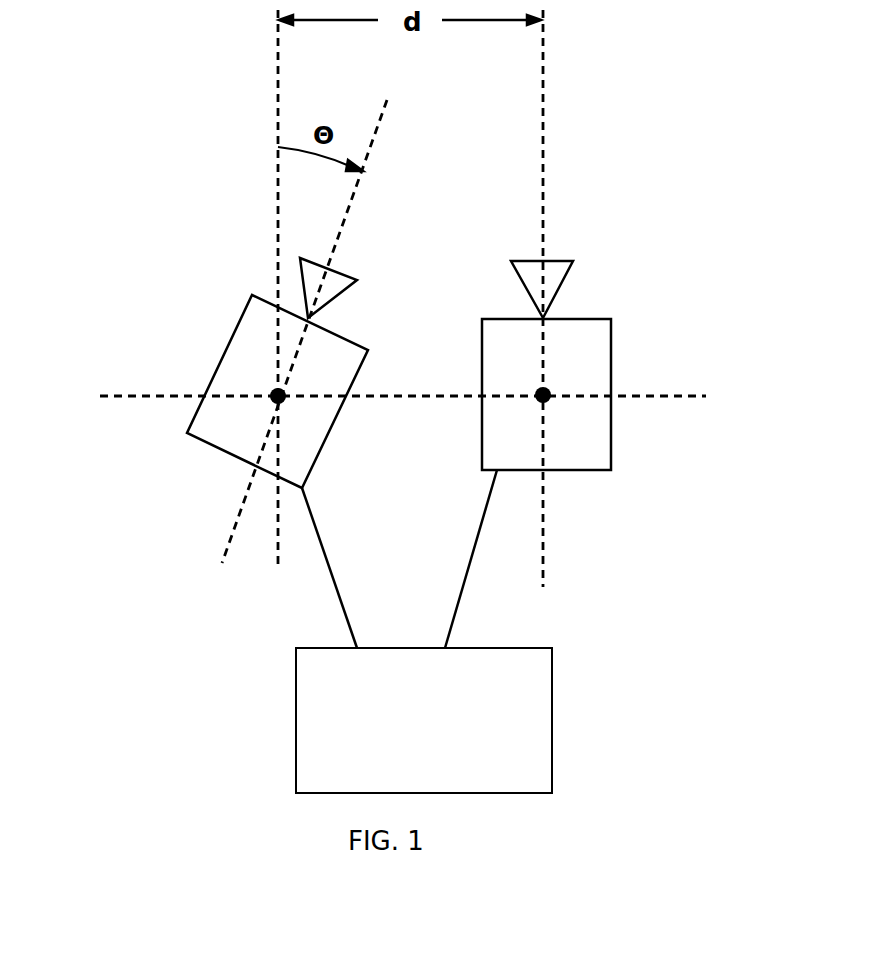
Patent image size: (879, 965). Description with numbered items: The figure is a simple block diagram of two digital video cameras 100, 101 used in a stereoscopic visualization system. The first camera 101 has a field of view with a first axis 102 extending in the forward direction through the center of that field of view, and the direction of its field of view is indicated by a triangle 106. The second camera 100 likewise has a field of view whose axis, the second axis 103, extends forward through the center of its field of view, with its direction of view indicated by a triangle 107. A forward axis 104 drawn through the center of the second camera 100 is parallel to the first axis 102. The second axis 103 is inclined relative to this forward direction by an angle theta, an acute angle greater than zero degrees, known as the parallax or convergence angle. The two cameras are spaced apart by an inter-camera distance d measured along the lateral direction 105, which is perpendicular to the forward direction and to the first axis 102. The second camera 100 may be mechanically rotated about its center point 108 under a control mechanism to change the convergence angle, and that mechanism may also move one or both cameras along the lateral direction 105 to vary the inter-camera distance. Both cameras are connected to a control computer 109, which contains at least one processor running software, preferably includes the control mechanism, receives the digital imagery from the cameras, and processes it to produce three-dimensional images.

The second camera 100 is at (202, 437).
The first camera 101 is at (610, 440).
The first axis 102 is at (543, 122).
The second axis 103 is at (376, 140).
The forward axis 104 is at (277, 122).
The lateral direction 105 is at (125, 396).
The triangle 106 is at (563, 282).
The triangle 107 is at (338, 298).
The center point 108 is at (275, 388).
The control computer 109 is at (298, 692).